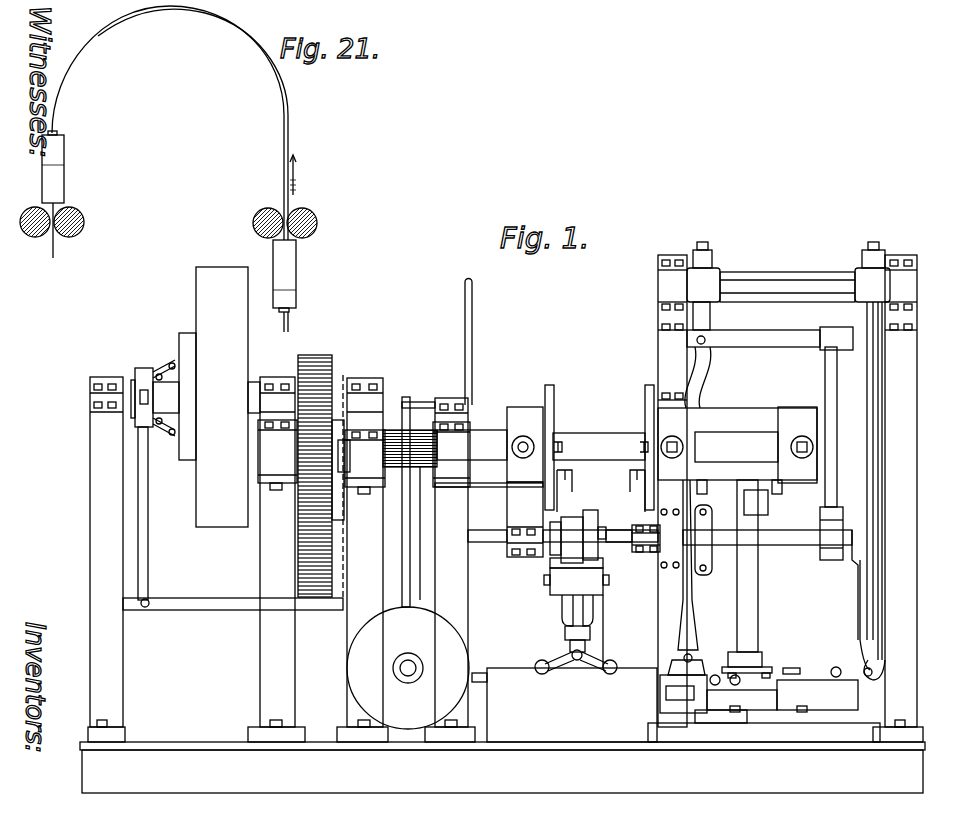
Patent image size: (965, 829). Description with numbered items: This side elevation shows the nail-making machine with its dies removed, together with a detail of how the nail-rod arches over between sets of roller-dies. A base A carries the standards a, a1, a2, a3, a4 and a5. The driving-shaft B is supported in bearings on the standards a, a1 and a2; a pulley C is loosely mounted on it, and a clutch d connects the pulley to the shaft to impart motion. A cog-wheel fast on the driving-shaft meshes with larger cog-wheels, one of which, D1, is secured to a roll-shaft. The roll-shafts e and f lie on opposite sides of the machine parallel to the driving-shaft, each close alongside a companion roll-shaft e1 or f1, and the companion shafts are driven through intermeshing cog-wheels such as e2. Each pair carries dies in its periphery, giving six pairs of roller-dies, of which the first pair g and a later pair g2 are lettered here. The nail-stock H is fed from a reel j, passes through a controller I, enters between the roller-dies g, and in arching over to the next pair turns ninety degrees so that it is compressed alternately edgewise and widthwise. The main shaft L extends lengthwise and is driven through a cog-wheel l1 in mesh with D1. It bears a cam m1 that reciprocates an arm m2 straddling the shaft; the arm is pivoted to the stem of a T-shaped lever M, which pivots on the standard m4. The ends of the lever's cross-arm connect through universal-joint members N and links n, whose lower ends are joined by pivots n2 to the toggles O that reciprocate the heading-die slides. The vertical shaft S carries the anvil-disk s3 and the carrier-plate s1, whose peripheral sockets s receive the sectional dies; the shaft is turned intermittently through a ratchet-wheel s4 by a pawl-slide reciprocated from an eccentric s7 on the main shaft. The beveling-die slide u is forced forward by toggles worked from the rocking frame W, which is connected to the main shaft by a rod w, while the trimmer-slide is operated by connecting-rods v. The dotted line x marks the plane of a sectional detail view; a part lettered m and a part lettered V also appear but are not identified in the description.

In FIG. 1, the base A is at (502, 767).
In FIG. 1, the standard a is at (106, 559).
In FIG. 1, the standard a1 is at (276, 559).
In FIG. 1, the standard a2 is at (362, 560).
In FIG. 1, the standard a3 is at (450, 570).
In FIG. 1, the standard a4 is at (658, 592).
In FIG. 1, the standard a5 is at (917, 568).
In FIG. 1, the driving-shaft B is at (255, 383).
In FIG. 1, the pulley C is at (196, 292).
In FIG. 1, the clutch d is at (150, 366).
In FIG. 1, the cog-wheel D1 is at (325, 368).
In FIG. 1, the line x x is at (340, 481).
In FIG. 21, the roll-shaft e is at (254, 224).
In FIG. 1, the roll-shaft e is at (340, 450).
In FIG. 1, the roll-shaft e1 is at (482, 432).
In FIG. 21, the cog-wheel e2 is at (316, 224).
In FIG. 1, the cog-wheel e2 is at (438, 456).
In FIG. 21, the roll-shaft f is at (85, 222).
In FIG. 21, the roll-shaft f1 is at (19, 224).
In FIG. 1, the pair of roller-dies g is at (596, 447).
In FIG. 1, the pair of roller-dies g2 is at (640, 447).
In FIG. 21, the nail-stock H is at (284, 170).
In FIG. 1, the nail-stock H is at (472, 676).
In FIG. 1, the controller I is at (601, 490).
In FIG. 1, the reel j is at (408, 668).
In FIG. 1, the main shaft L is at (482, 532).
In FIG. 1, the cog-wheel l1 is at (292, 580).
In FIG. 1, the collar m is at (555, 538).
In FIG. 1, the cam m1 is at (592, 515).
In FIG. 1, the arm m2 is at (573, 517).
In FIG. 1, the standard m4 is at (600, 636).
In FIG. 1, the T-shaped lever M is at (640, 549).
In FIG. 1, the link n is at (560, 630).
In FIG. 1, the pivot n2 is at (562, 628).
In FIG. 1, the universal-joint member N is at (560, 572).
In FIG. 1, the toggle O is at (592, 656).
In FIG. 1, the socket s is at (766, 668).
In FIG. 1, the carrier-plate s1 is at (787, 668).
In FIG. 1, the anvil-disk s3 is at (760, 656).
In FIG. 1, the ratchet-wheel s4 is at (735, 470).
In FIG. 1, the eccentric s7 is at (706, 542).
In FIG. 1, the vertical shaft S is at (754, 584).
In FIG. 1, the slide u is at (660, 690).
In FIG. 1, the connecting-rods v is at (688, 634).
In FIG. 1, the bed V is at (782, 689).
In FIG. 1, the rod w is at (832, 412).
In FIG. 1, the rocking frame W is at (783, 280).